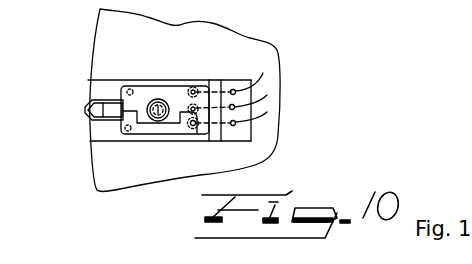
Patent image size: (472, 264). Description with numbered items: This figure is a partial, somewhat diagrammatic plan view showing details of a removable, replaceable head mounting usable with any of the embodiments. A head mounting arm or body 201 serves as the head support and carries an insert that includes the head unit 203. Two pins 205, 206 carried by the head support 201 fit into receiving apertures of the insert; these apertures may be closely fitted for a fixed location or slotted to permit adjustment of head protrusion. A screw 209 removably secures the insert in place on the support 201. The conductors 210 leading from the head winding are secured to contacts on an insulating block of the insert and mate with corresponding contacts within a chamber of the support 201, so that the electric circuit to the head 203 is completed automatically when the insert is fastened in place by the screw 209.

The head mounting arm or body 201 is at (266, 60).
The head unit 203 is at (87, 117).
The pin 205 is at (120, 139).
The pin 206 is at (132, 90).
The screw 209 is at (158, 113).
The conductors 210 is at (183, 135).